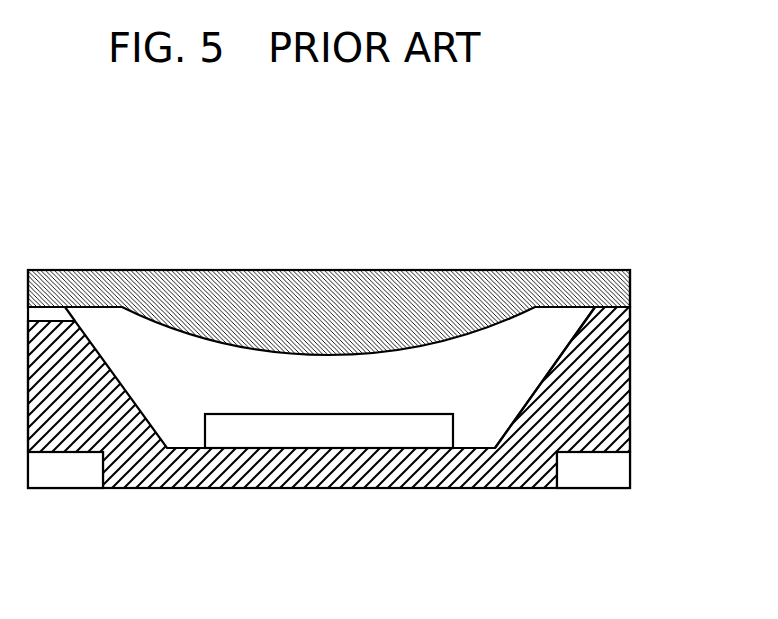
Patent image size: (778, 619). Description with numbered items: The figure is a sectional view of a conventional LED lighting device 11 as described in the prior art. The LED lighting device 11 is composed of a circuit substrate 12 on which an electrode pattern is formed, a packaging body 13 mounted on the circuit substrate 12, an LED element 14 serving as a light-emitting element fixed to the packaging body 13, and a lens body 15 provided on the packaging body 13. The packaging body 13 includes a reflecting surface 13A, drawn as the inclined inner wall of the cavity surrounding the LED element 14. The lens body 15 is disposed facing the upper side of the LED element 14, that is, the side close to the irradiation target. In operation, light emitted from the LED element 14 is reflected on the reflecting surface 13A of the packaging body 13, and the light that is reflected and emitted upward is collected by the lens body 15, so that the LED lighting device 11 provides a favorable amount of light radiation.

The LED lighting device 11 is at (85, 163).
The circuit substrate 12 is at (595, 477).
The packaging body 13 is at (605, 380).
The reflecting surface 13A is at (548, 372).
The LED element 14 is at (320, 432).
The lens body 15 is at (355, 297).